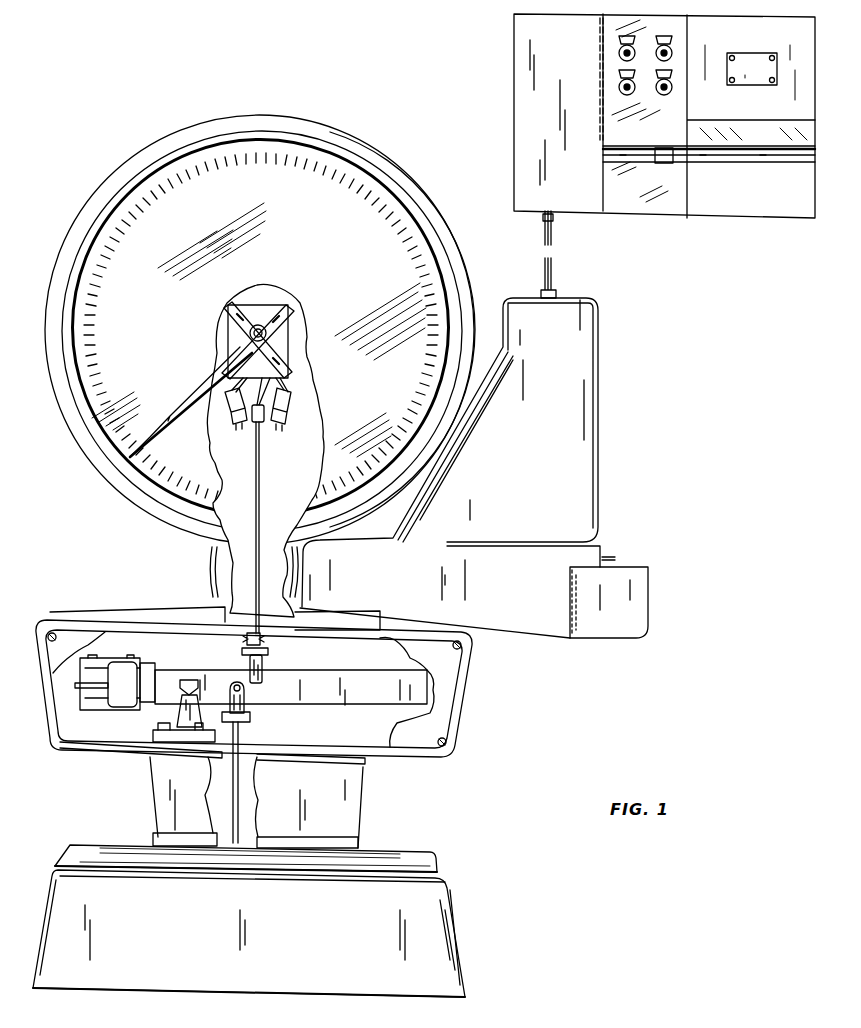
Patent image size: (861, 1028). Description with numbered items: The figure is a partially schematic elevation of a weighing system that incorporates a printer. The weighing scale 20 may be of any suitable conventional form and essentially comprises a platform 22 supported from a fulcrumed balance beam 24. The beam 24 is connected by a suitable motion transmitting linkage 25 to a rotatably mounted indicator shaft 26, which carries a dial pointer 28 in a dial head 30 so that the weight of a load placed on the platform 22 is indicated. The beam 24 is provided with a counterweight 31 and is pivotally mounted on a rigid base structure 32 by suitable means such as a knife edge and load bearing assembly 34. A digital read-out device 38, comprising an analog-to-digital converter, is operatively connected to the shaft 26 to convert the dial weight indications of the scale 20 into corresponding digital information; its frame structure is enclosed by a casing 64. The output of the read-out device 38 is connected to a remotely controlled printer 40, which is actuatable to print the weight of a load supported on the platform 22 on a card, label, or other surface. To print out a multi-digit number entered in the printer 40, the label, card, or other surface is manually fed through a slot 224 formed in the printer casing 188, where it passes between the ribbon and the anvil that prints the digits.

The weighing scale 20 is at (98, 518).
The platform 22 is at (413, 860).
The balance beam 24 is at (413, 692).
The motion transmitting linkage 25 is at (263, 633).
The indicator shaft 26 is at (250, 333).
The dial pointer 28 is at (192, 393).
The dial head 30 is at (330, 125).
The counterweight 31 is at (122, 670).
The base structure 32 is at (112, 755).
The knife edge and load bearing assembly 34 is at (183, 682).
The digital read-out device 38 is at (600, 443).
The printer 40 is at (640, 156).
The casing 64 is at (575, 502).
The casing 188 is at (538, 26).
The slot 224 is at (740, 152).